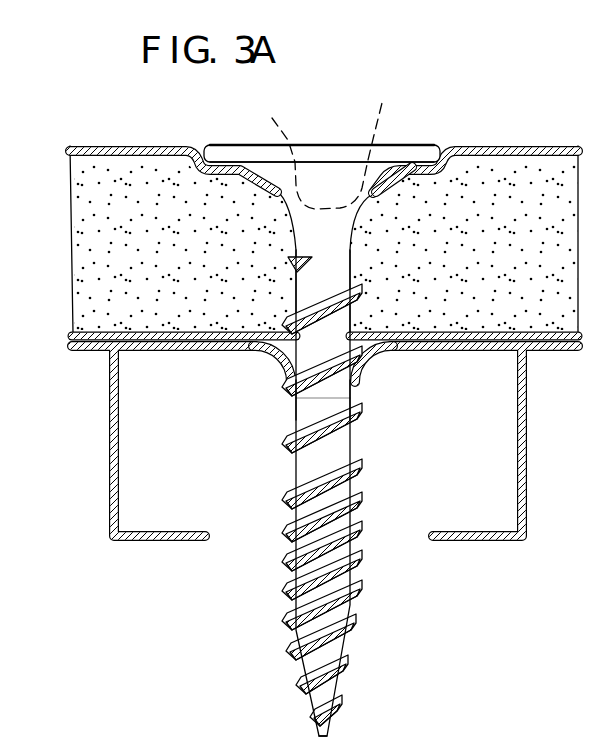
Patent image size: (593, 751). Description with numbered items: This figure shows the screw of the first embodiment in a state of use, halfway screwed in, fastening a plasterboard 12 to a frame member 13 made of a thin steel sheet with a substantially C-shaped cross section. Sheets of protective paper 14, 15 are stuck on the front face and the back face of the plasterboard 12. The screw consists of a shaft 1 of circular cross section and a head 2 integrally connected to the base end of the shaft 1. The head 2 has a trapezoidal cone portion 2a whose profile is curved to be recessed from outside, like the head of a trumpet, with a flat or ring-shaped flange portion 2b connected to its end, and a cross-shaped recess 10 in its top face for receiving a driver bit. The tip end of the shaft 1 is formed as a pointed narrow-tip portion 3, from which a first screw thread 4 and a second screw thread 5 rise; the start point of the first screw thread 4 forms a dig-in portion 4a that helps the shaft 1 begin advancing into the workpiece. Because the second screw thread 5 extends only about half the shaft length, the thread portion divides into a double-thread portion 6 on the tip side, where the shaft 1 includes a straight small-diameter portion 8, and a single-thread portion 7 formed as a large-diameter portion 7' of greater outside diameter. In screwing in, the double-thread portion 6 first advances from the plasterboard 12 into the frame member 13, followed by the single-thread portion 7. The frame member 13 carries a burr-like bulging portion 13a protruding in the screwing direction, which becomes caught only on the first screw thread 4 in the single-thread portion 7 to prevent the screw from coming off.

The shaft 1 is at (358, 395).
The head 2 is at (361, 130).
The trapezoidal cone portion 2a is at (328, 185).
The flange portion 2b is at (410, 162).
The narrow-tip portion 3 is at (267, 671).
The first screw thread 4 is at (360, 413).
The dig-in portion 4a is at (330, 730).
The second screw thread 5 is at (350, 563).
The double-thread portion 6 is at (260, 498).
The single-thread portion 7 is at (296, 373).
The large-diameter portion 7' is at (268, 410).
The small-diameter portion 8 is at (348, 515).
The cross-shaped recess 10 is at (309, 150).
The plasterboard 12 is at (88, 264).
The frame member 13 is at (108, 473).
The bulging portion 13a is at (276, 368).
The protective paper 14 is at (123, 147).
The protective paper 15 is at (84, 347).